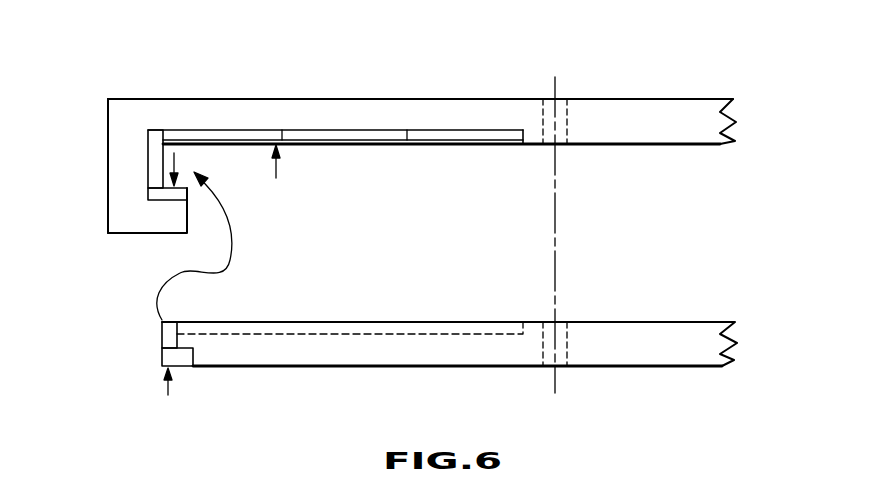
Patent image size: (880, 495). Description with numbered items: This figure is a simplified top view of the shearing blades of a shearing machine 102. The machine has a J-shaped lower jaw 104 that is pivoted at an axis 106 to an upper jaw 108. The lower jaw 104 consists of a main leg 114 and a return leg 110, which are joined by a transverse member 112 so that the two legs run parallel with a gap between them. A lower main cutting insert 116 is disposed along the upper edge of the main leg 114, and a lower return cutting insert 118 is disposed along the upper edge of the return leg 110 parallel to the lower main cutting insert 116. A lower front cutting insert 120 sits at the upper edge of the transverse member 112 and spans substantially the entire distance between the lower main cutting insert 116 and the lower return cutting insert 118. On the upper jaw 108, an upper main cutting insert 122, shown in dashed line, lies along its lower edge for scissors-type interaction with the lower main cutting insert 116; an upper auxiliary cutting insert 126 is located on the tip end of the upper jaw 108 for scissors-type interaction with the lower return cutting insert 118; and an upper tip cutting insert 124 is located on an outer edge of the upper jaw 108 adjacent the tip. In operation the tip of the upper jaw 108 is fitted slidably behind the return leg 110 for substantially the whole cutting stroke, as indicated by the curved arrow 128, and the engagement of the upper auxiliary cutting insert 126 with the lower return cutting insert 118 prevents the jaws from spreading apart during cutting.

The shearing machine 102 is at (399, 217).
The lower jaw 104 is at (391, 124).
The axis 106 is at (556, 210).
The upper jaw 108 is at (415, 349).
The return leg 110 is at (162, 225).
The transverse member 112 is at (111, 182).
The main leg 114 is at (248, 99).
The lower main cutting insert 116 is at (357, 137).
The lower return cutting insert 118 is at (155, 194).
The lower front cutting insert 120 is at (153, 163).
The upper main cutting insert 122 is at (310, 326).
The upper tip cutting insert 124 is at (162, 343).
The upper auxiliary cutting insert 126 is at (180, 355).
The curved arrow 128 is at (232, 257).